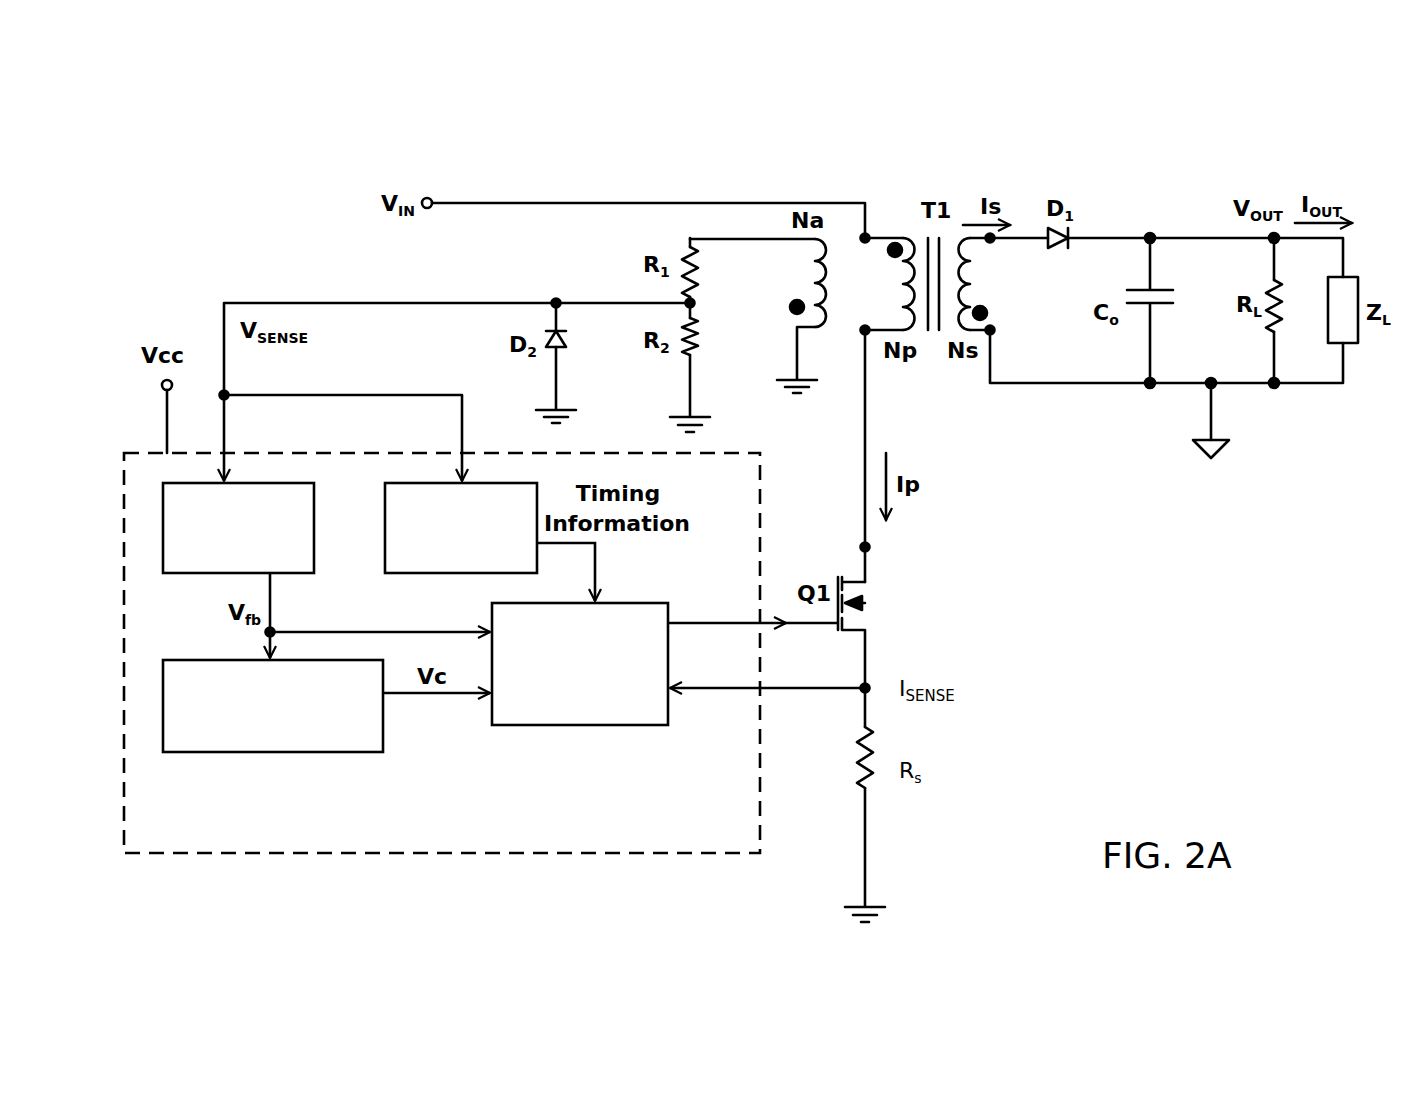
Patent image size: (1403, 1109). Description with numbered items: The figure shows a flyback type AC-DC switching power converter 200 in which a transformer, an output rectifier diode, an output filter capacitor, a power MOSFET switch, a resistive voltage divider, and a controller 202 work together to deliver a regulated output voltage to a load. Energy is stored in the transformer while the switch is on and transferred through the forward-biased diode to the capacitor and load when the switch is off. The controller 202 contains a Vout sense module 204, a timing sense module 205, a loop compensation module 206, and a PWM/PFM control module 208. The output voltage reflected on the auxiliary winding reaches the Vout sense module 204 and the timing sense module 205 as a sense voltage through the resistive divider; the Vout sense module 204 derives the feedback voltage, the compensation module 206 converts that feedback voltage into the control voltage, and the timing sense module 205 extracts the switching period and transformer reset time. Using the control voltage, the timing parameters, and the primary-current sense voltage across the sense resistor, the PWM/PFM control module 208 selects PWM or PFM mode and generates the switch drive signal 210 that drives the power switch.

The power converter 200 is at (1035, 630).
The controller 202 is at (413, 839).
The Vout sense module 204 is at (219, 555).
The timing sense module 205 is at (442, 568).
The loop compensation module 206 is at (254, 733).
The PWM/PFM control module 208 is at (561, 705).
The output drive signal 210 is at (685, 623).